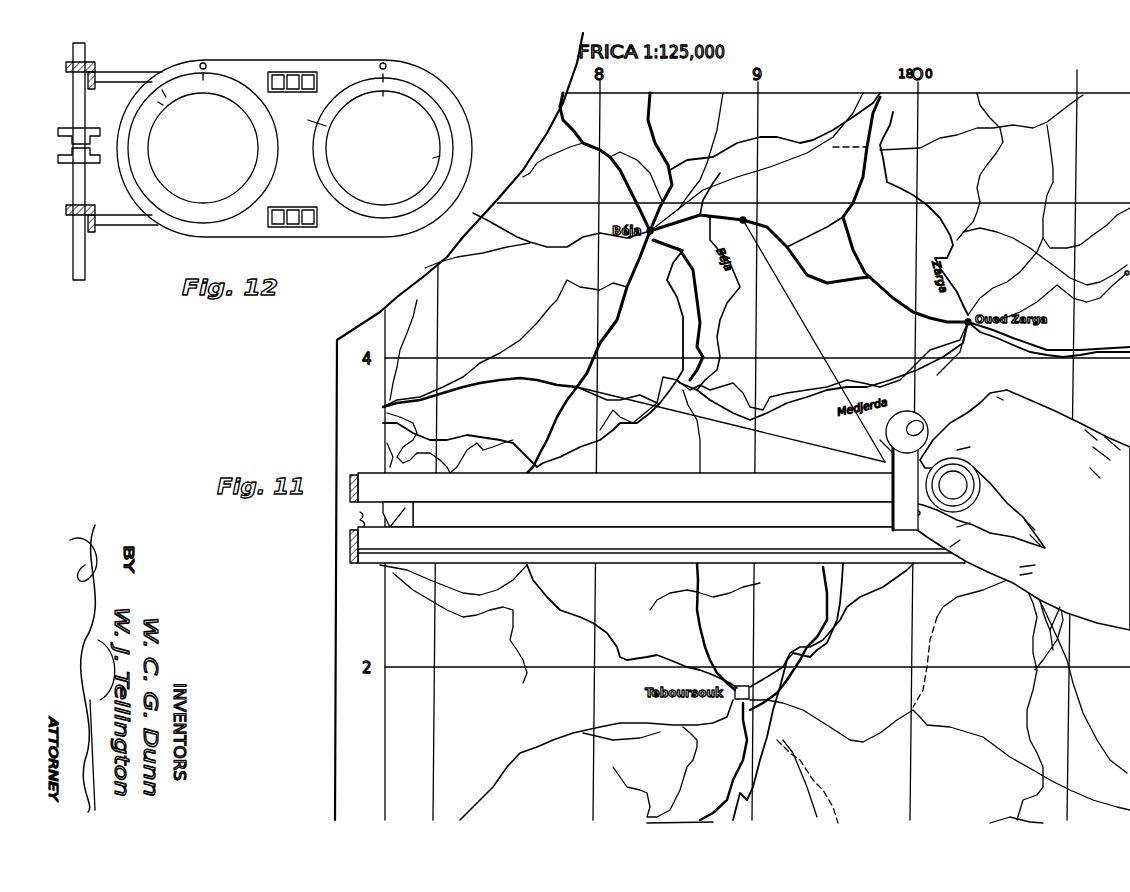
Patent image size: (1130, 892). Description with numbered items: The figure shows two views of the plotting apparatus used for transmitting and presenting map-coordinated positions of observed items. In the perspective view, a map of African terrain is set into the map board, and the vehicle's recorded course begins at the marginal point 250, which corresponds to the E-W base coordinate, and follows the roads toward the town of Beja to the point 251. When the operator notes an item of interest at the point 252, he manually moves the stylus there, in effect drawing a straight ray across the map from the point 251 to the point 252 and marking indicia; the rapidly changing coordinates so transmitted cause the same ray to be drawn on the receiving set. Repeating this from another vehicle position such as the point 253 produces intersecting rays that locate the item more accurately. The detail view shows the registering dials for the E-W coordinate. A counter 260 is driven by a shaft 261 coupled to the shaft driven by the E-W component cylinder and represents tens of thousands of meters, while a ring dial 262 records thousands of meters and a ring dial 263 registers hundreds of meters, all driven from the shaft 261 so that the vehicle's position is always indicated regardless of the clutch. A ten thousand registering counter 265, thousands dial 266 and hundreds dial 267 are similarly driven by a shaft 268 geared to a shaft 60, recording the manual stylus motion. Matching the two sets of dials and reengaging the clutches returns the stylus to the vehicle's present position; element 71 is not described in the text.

In FIG. 12, the shaft 60 is at (86, 52).
In FIG. 12, the shaft 268 is at (122, 78).
In FIG. 12, the shaft 261 is at (112, 224).
In FIG. 12, the ring dial 262 is at (192, 210).
In FIG. 12, the thousands dial 266 is at (212, 99).
In FIG. 12, the hundreds dial 267 is at (394, 100).
In FIG. 12, the ring dial 263 is at (440, 157).
In FIG. 12, the ten thousand registering counter 265 is at (294, 74).
In FIG. 12, the counter 260 is at (293, 228).
In FIG. 11, the marginal point 250 is at (390, 406).
In FIG. 11, the point 251 is at (587, 388).
In FIG. 11, the point 252 is at (880, 463).
In FIG. 11, the point 253 is at (745, 219).
In FIG. 11, the pivot post 71 is at (918, 421).